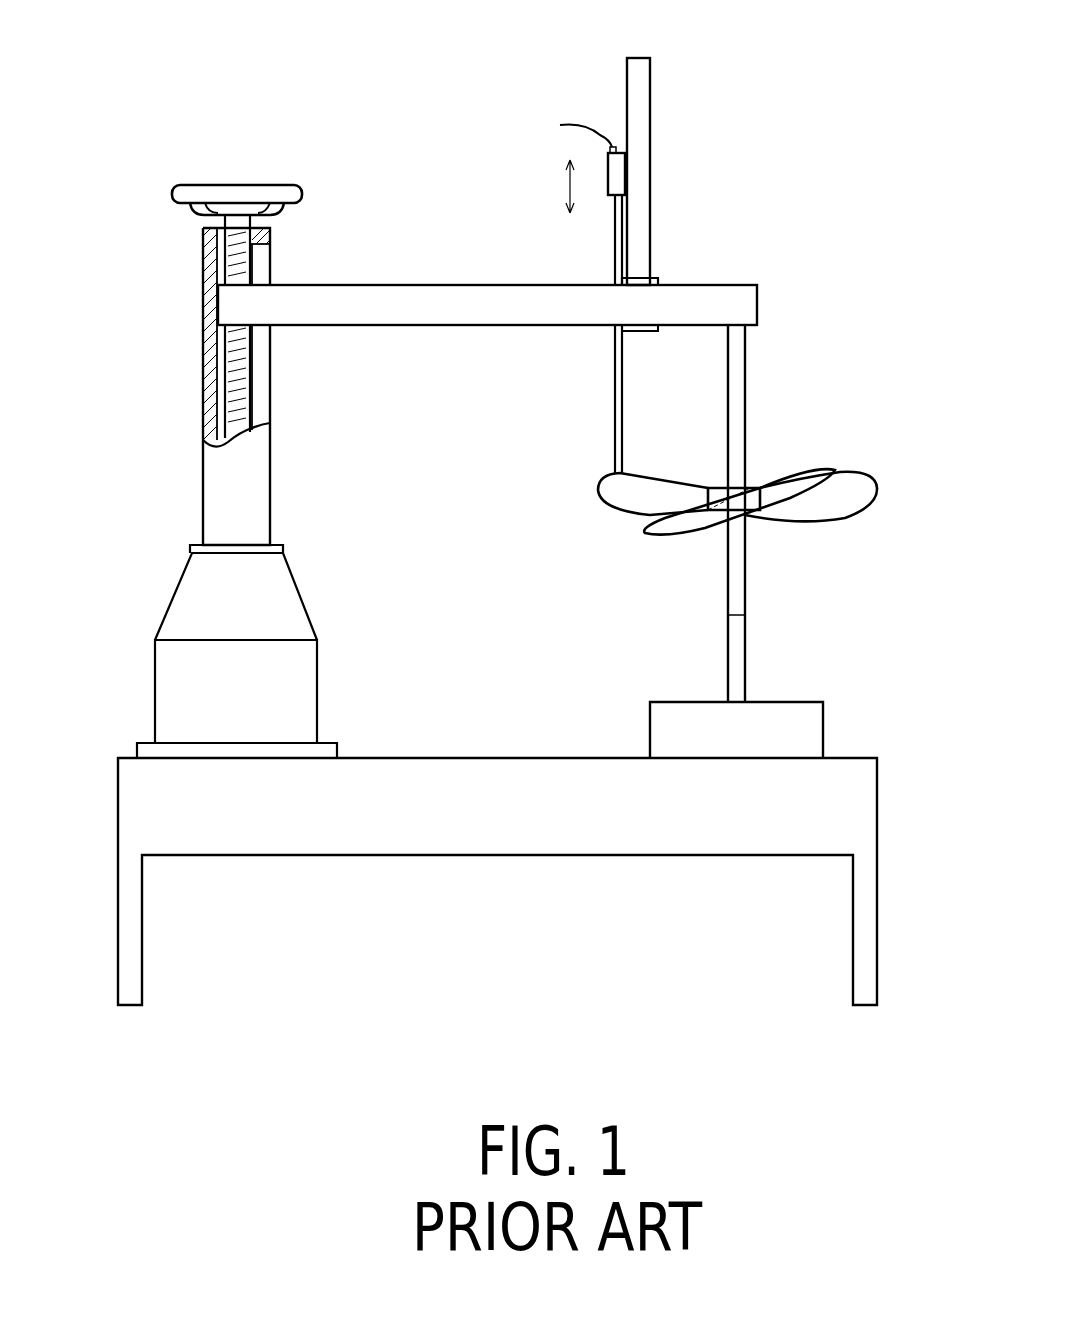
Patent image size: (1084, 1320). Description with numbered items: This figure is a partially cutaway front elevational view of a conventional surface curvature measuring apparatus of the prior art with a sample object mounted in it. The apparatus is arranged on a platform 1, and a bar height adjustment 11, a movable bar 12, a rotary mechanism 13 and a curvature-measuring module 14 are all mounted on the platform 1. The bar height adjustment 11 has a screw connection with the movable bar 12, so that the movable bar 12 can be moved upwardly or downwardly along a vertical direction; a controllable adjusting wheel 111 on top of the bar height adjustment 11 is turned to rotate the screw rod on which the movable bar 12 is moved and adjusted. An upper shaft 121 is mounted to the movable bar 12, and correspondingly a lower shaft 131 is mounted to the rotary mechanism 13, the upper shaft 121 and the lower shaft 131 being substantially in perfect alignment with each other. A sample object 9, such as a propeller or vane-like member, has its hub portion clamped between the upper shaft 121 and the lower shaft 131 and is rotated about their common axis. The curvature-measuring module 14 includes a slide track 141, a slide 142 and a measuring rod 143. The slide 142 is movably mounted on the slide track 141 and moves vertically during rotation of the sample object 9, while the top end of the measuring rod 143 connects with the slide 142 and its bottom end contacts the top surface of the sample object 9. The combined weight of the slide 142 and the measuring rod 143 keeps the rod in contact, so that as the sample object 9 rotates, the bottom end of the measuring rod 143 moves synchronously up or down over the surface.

The platform 1 is at (382, 856).
The bar height adjustment 11 is at (187, 592).
The controllable adjusting wheel 111 is at (243, 190).
The movable bar 12 is at (706, 295).
The upper shaft 121 is at (737, 402).
The rotary mechanism 13 is at (677, 712).
The lower shaft 131 is at (770, 612).
The curvature-measuring module 14 is at (535, 243).
The slide track 141 is at (625, 70).
The slide 142 is at (603, 170).
The measuring rod 143 is at (587, 248).
The sample object 9 is at (832, 465).